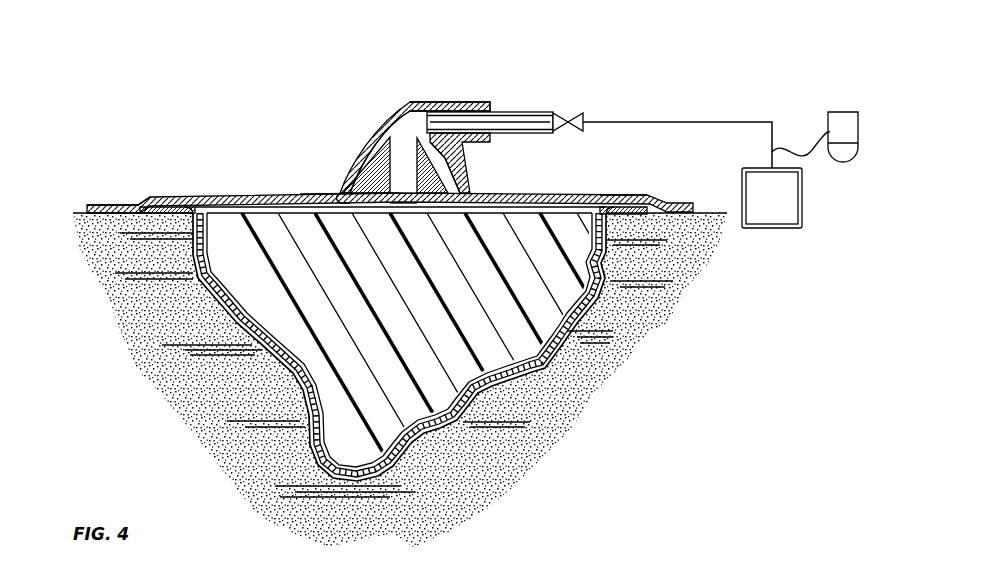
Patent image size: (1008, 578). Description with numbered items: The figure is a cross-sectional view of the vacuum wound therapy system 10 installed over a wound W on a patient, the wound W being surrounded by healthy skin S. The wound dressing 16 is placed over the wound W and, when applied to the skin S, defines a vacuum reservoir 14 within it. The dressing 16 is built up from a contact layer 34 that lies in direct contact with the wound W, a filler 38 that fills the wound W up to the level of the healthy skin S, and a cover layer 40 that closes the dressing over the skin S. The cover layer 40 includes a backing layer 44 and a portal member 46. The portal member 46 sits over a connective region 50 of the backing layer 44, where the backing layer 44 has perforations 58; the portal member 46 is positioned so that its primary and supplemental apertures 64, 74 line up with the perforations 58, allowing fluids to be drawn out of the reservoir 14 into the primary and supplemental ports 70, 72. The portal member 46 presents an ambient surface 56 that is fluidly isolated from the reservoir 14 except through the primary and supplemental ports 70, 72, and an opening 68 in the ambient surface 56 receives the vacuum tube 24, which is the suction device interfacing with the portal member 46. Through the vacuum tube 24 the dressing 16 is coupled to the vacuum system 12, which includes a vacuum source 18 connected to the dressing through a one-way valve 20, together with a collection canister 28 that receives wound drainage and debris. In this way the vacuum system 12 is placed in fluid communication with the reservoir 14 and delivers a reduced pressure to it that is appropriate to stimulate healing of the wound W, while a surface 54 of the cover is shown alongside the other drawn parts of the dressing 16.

The vacuum wound therapy system 10 is at (85, 136).
The vacuum system 12 is at (833, 194).
The vacuum reservoir 14 is at (290, 207).
The wound dressing 16 is at (278, 109).
The vacuum source 18 is at (760, 167).
The one-way valve 20 is at (592, 115).
The vacuum tube 24 is at (546, 112).
The collection canister 28 is at (842, 112).
The contact layer 34 is at (572, 322).
The filler 38 is at (528, 298).
The cover layer 40 is at (611, 173).
The backing layer 44 is at (203, 200).
The portal member 46 is at (440, 101).
The connective region 50 is at (339, 187).
The upper surface of cover 54 is at (333, 201).
The ambient surface 56 is at (500, 104).
The perforations 58 is at (465, 216).
The primary aperture 64 is at (411, 206).
The opening 68 is at (511, 124).
The primary port 70 is at (402, 126).
The supplemental port 72 is at (377, 153).
The supplemental aperture 74 is at (352, 204).
The healthy skin S is at (662, 218).
The wound W is at (270, 356).